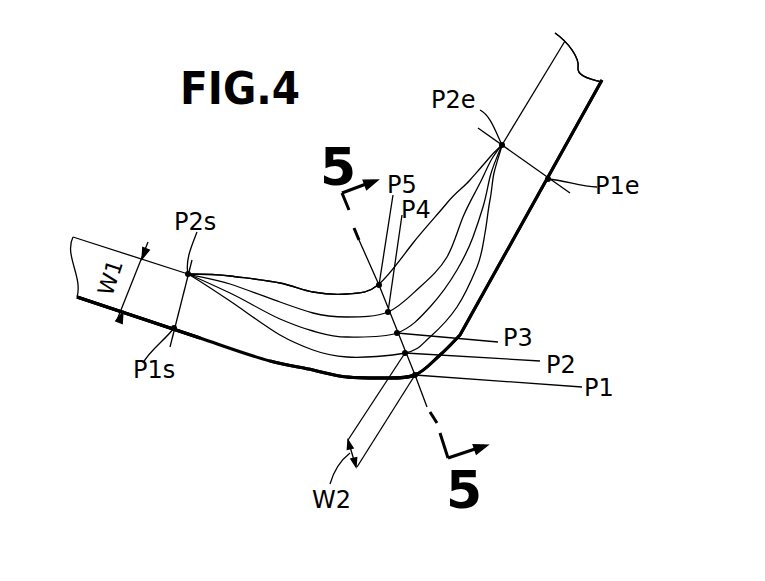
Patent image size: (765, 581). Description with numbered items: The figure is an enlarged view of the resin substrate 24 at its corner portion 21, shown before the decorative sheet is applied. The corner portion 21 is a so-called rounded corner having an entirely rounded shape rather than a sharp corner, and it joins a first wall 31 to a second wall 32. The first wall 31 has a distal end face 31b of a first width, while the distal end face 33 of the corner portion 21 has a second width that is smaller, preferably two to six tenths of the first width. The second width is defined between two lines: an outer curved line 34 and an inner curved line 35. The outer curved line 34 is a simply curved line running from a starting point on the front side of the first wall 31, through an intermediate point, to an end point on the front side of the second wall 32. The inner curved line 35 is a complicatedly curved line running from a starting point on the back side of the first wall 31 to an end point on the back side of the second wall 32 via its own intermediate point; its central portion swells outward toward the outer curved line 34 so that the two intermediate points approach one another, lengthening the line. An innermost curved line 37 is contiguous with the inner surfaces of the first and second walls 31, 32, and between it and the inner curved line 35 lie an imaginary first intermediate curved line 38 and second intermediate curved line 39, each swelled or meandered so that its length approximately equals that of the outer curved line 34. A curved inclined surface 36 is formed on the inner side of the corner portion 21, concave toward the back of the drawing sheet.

The corner portion 21 is at (538, 459).
The resin substrate 24 is at (572, 77).
The first wall 31 is at (100, 305).
The distal end face of the first wall 31b is at (150, 312).
The second wall 32 is at (577, 128).
The distal end face of the corner portion 33 is at (423, 360).
The outer curved line 34 is at (347, 379).
The inner curved line 35 is at (322, 348).
The curved inclined surface 36 is at (282, 308).
The innermost curved line 37 is at (340, 294).
The first intermediate curved line 38 is at (293, 327).
The second intermediate curved line 39 is at (313, 302).